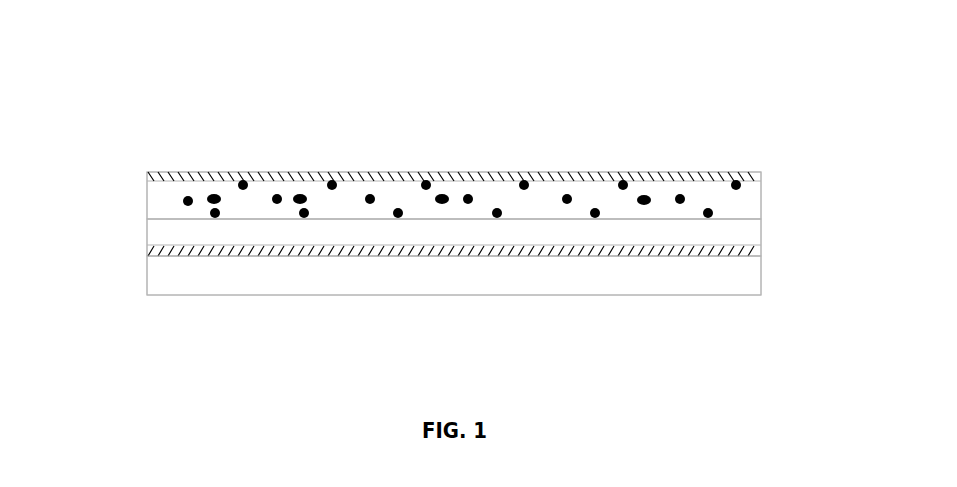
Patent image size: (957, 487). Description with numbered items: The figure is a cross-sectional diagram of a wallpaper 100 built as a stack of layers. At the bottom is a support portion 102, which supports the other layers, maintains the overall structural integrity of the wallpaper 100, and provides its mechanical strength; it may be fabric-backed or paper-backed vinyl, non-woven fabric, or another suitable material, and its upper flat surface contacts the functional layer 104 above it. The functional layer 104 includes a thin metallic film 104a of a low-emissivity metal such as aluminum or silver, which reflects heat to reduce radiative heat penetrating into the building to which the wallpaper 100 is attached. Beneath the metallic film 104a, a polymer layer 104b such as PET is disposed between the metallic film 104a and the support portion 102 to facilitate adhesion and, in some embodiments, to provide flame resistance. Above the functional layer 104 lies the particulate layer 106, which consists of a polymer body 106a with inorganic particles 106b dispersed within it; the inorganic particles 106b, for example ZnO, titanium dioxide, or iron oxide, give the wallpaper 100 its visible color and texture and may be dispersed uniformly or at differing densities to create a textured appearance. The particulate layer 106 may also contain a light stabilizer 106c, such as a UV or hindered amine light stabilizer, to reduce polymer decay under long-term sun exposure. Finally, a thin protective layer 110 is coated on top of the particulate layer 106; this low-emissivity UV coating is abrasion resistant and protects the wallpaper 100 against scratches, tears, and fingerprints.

The wallpaper 100 is at (450, 26).
The support portion 102 is at (761, 288).
The functional layer 104 is at (761, 238).
The metallic film 104a is at (159, 228).
The polymer layer 104b is at (159, 251).
The particulate layer 106 is at (761, 186).
The polymer body 106a is at (492, 193).
The inorganic particles 106b is at (188, 200).
The light stabilizer 106c is at (644, 200).
The protective layer 110 is at (698, 173).